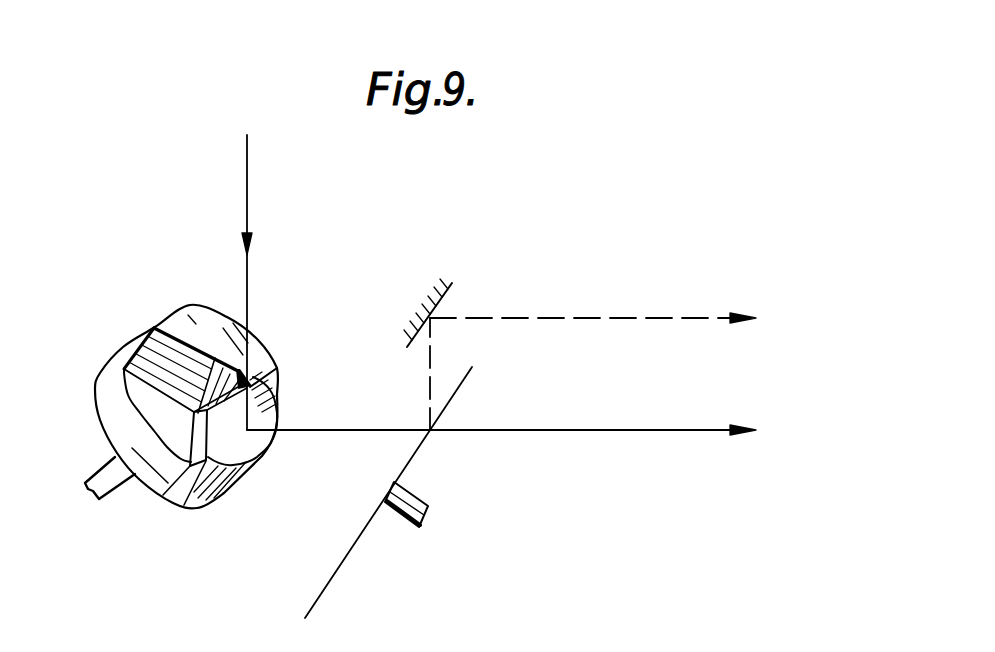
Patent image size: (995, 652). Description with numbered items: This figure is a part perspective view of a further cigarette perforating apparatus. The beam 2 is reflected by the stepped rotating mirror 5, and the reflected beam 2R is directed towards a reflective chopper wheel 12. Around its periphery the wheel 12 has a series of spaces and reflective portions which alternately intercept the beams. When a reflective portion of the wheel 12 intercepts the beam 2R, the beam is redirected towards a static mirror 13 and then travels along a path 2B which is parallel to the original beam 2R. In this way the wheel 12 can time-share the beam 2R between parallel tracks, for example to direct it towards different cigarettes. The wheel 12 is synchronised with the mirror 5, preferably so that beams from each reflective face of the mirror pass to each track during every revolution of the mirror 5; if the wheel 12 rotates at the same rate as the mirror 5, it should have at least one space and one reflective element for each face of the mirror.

The beam 2 is at (246, 178).
The reflected beam 2R is at (336, 432).
The path 2B is at (598, 318).
The stepped rotating mirror 5 is at (105, 405).
The reflective chopper wheel 12 is at (333, 581).
The static mirror 13 is at (452, 296).